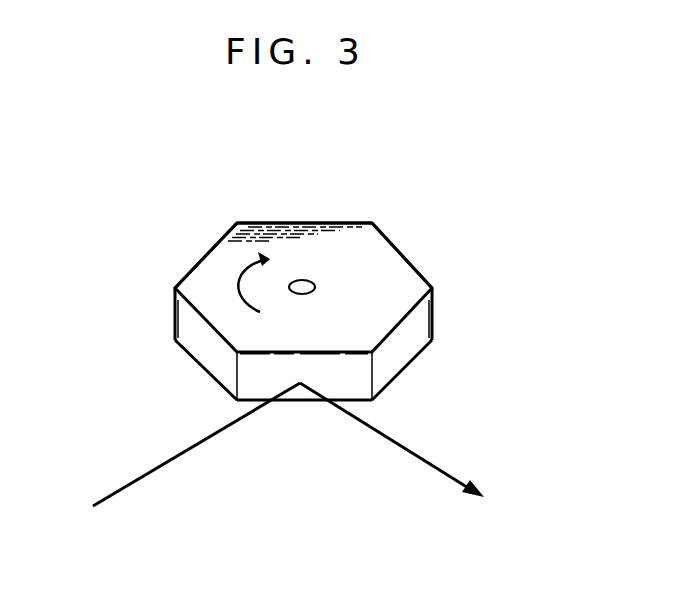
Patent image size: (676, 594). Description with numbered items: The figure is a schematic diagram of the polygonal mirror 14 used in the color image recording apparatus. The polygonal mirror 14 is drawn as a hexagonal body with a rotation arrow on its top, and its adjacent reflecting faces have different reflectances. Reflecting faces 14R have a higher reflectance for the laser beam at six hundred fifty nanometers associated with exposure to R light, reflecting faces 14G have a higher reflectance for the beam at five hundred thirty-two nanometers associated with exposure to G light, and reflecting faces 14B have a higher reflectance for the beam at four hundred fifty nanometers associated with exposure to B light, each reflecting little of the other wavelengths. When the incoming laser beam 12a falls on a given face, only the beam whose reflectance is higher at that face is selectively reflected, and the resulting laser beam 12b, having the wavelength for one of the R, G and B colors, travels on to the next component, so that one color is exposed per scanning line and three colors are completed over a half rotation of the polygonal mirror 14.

The polygonal mirror 14 is at (223, 250).
The reflecting faces 14B is at (190, 265).
The reflecting faces 14R is at (428, 266).
The reflecting faces 14G is at (331, 216).
The laser beam 12a is at (148, 477).
The laser beam 12b is at (422, 460).